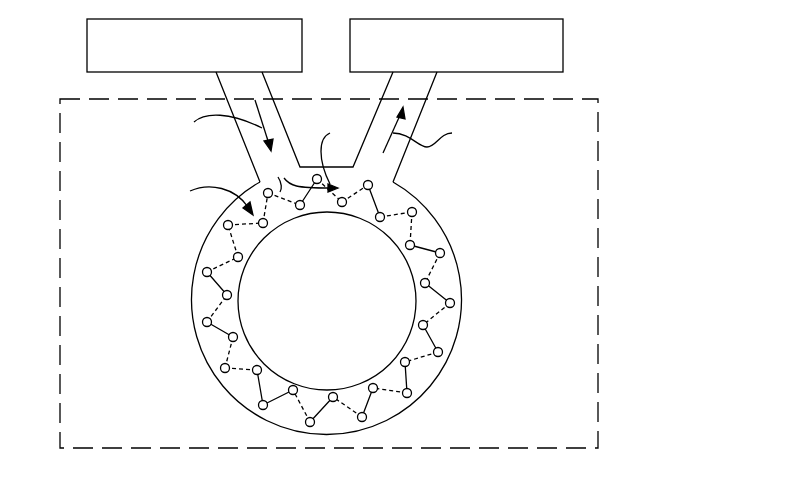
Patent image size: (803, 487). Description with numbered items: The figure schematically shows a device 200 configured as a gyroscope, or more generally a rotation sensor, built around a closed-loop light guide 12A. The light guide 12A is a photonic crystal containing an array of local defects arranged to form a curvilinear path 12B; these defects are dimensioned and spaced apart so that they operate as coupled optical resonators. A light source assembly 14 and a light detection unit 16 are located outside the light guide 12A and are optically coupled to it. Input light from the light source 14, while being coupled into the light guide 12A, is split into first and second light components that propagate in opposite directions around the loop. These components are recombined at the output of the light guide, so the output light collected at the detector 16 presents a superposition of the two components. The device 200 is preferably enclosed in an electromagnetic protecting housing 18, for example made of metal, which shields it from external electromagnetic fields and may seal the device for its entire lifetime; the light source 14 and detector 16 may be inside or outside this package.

The light source assembly 14 is at (87, 48).
The light detection unit 16 is at (563, 48).
The electromagnetic protecting housing 18 is at (583, 133).
The device 200 is at (628, 231).
The light guide 12A is at (463, 303).
The curvilinear path 12B is at (450, 268).